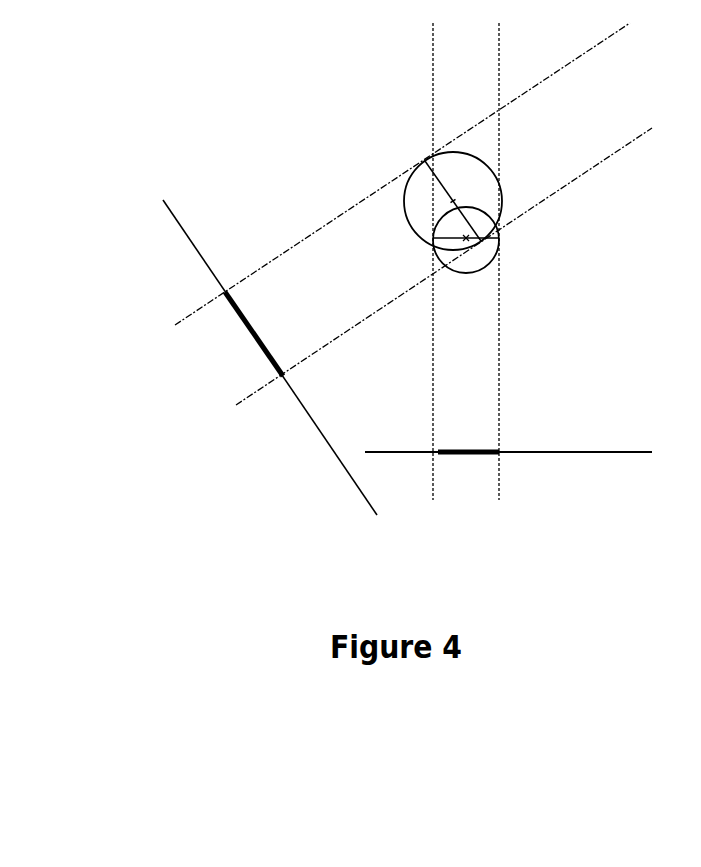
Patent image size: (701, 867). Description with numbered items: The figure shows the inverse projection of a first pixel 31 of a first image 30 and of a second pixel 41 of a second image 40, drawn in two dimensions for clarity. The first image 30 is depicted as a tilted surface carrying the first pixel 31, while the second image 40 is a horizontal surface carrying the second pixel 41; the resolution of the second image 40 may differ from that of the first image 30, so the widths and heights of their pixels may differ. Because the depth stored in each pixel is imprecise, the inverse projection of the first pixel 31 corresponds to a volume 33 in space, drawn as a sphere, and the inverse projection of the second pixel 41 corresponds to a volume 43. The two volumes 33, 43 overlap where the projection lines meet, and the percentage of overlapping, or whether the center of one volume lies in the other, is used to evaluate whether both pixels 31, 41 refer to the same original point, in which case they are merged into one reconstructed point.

The first image 30 is at (318, 435).
The first pixel 31 is at (243, 335).
The volume (sphere) 33 is at (405, 203).
The second image 40 is at (607, 460).
The second pixel 41 is at (468, 457).
The volume 43 is at (485, 270).